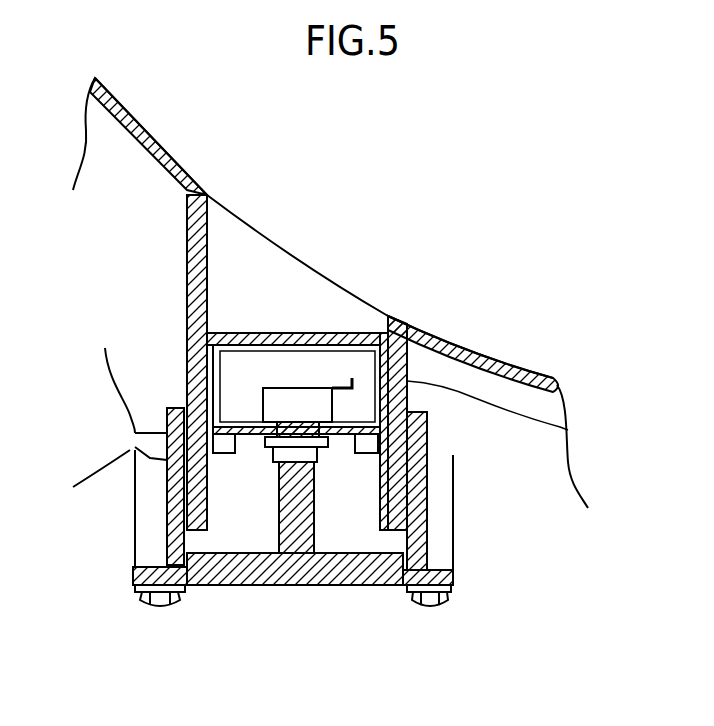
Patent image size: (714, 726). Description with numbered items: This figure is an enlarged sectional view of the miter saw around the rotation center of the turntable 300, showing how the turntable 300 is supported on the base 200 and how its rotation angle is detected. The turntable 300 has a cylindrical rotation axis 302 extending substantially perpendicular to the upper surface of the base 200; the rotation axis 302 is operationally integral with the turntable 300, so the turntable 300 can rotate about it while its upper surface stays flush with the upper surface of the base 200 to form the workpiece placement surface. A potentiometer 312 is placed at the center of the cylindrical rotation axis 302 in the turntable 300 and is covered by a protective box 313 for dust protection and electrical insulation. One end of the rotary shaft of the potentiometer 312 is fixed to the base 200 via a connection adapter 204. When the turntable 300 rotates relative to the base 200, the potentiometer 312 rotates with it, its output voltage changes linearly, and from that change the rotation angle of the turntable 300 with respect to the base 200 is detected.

The turntable 300 is at (530, 362).
The rotation axis 302 is at (568, 430).
The protective box 313 is at (266, 333).
The potentiometer 312 is at (310, 388).
The base 200 is at (457, 513).
The connection adapter 204 is at (290, 585).